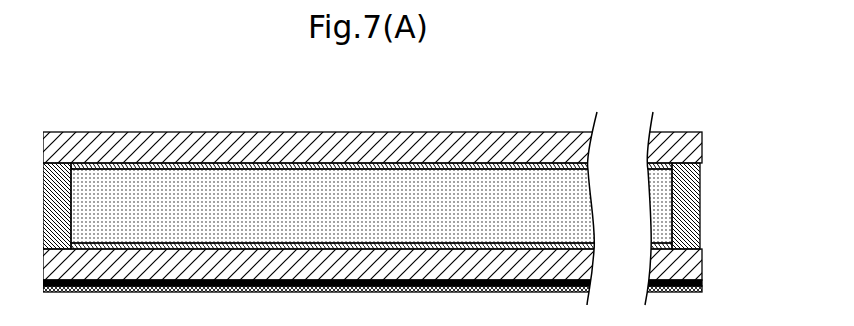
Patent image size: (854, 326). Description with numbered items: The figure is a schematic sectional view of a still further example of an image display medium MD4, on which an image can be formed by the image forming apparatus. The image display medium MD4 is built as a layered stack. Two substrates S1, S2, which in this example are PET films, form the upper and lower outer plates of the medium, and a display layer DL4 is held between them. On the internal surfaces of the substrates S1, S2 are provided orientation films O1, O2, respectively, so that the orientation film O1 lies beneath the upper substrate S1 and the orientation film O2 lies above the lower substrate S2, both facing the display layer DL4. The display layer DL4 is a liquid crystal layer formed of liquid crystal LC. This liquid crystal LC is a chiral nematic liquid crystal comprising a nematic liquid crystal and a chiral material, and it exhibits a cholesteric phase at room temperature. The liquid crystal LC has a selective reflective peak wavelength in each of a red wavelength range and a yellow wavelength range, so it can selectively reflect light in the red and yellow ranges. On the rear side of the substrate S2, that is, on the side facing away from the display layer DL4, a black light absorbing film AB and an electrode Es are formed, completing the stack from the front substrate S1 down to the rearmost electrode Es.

The image display medium MD4 is at (67, 128).
The substrate S1 is at (706, 146).
The orientation film O1 is at (648, 168).
The liquid crystal LC is at (660, 207).
The orientation film O2 is at (648, 247).
The substrate S2 is at (687, 265).
The display layer DL4 is at (703, 203).
The black light absorbing film AB is at (703, 282).
The electrode Es is at (703, 288).